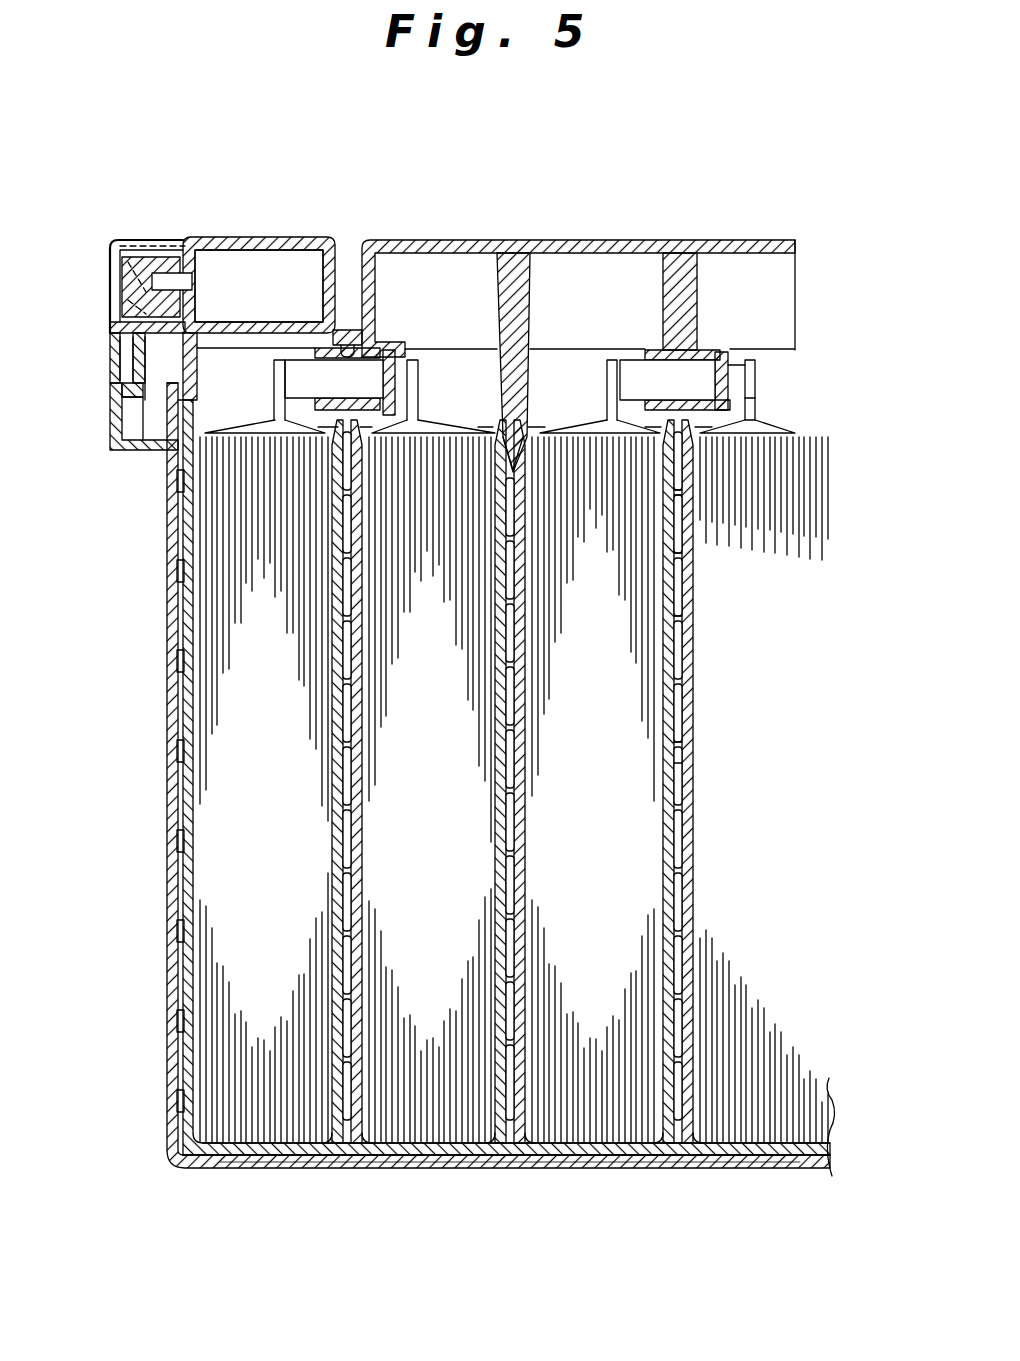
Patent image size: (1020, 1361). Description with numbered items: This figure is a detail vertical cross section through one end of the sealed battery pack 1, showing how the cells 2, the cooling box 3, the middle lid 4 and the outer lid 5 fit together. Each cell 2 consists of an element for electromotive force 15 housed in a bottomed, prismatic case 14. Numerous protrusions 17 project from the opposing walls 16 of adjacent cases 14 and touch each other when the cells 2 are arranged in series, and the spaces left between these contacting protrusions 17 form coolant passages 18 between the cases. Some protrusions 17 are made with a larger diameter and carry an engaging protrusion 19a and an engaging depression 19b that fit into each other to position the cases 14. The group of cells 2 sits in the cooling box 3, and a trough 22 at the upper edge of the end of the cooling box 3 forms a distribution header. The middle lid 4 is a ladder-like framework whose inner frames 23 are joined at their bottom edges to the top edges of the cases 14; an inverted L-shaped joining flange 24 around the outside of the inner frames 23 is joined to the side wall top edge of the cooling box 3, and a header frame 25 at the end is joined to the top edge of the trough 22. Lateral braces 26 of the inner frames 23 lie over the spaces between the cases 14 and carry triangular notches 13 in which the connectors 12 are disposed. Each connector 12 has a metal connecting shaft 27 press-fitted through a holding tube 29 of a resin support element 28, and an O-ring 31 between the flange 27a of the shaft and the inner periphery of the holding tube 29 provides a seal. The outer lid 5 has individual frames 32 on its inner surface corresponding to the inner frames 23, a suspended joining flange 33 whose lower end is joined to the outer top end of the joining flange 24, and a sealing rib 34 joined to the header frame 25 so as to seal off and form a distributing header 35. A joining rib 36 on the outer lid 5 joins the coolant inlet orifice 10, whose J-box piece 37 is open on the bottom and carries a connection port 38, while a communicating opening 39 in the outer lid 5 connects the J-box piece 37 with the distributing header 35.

The sealed battery pack 1 is at (166, 748).
The cell 2 is at (303, 1168).
The cooling box 3 is at (178, 790).
The middle lid 4 is at (102, 387).
The outer lid 5 is at (493, 238).
The coolant inlet orifice 10 is at (291, 231).
The connector 12 is at (387, 331).
The triangular notch 13 is at (683, 402).
The case 14 is at (252, 1165).
The element for electromotive force 15 is at (232, 801).
The opposing wall 16 is at (694, 788).
The protrusion 17 is at (690, 548).
The coolant passage 18 is at (171, 917).
The engaging protrusion 19a is at (668, 552).
The engaging depression 19b is at (690, 553).
The trough 22 is at (127, 430).
The inner frame 23 is at (153, 452).
The joining flange 24 is at (114, 393).
The header frame 25 is at (152, 402).
The lateral brace 26 is at (189, 362).
The connecting shaft 27 is at (630, 377).
The flange 27a is at (757, 372).
The support element 28 is at (714, 341).
The holding tube 29 is at (650, 350).
The O-ring 31 is at (740, 350).
The individual frame 32 is at (526, 297).
The joining flange 33 is at (110, 367).
The sealing rib 34 is at (110, 345).
The distributing header 35 is at (134, 420).
The joining rib 36 is at (192, 318).
The J-box piece 37 is at (248, 243).
The connection port 38 is at (172, 266).
The communicating opening 39 is at (107, 262).